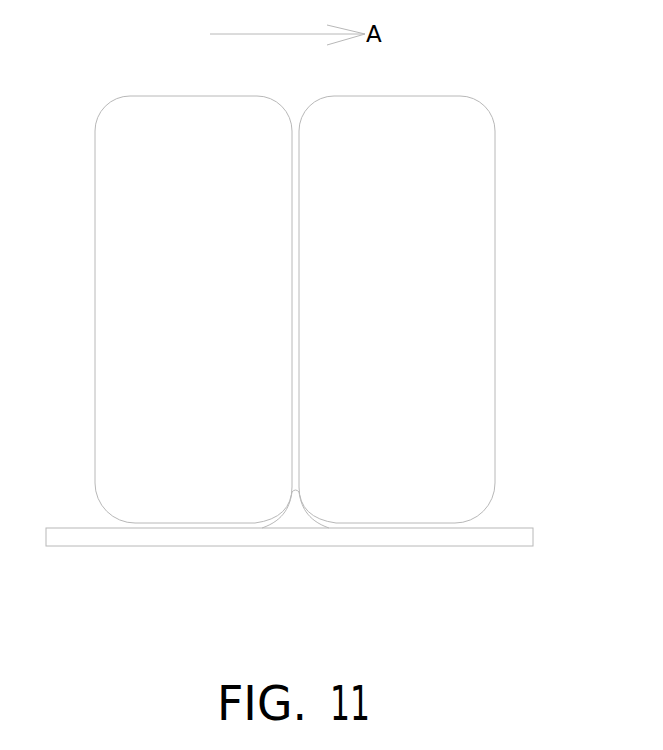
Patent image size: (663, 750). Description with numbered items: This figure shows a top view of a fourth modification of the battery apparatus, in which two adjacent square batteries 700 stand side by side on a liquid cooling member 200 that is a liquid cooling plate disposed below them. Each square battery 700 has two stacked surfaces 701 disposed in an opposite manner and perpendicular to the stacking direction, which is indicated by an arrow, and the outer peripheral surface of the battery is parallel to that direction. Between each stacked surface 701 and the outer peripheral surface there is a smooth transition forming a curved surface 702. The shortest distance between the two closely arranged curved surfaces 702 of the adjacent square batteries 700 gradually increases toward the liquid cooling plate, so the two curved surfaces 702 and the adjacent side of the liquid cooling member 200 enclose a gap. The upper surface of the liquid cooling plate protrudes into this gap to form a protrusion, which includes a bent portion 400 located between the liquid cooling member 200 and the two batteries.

The square battery 700 is at (130, 250).
The stacked surface 701 is at (285, 361).
The curved surface 702 is at (269, 500).
The liquid cooling member 200 is at (172, 540).
The bent portion 400 is at (295, 518).